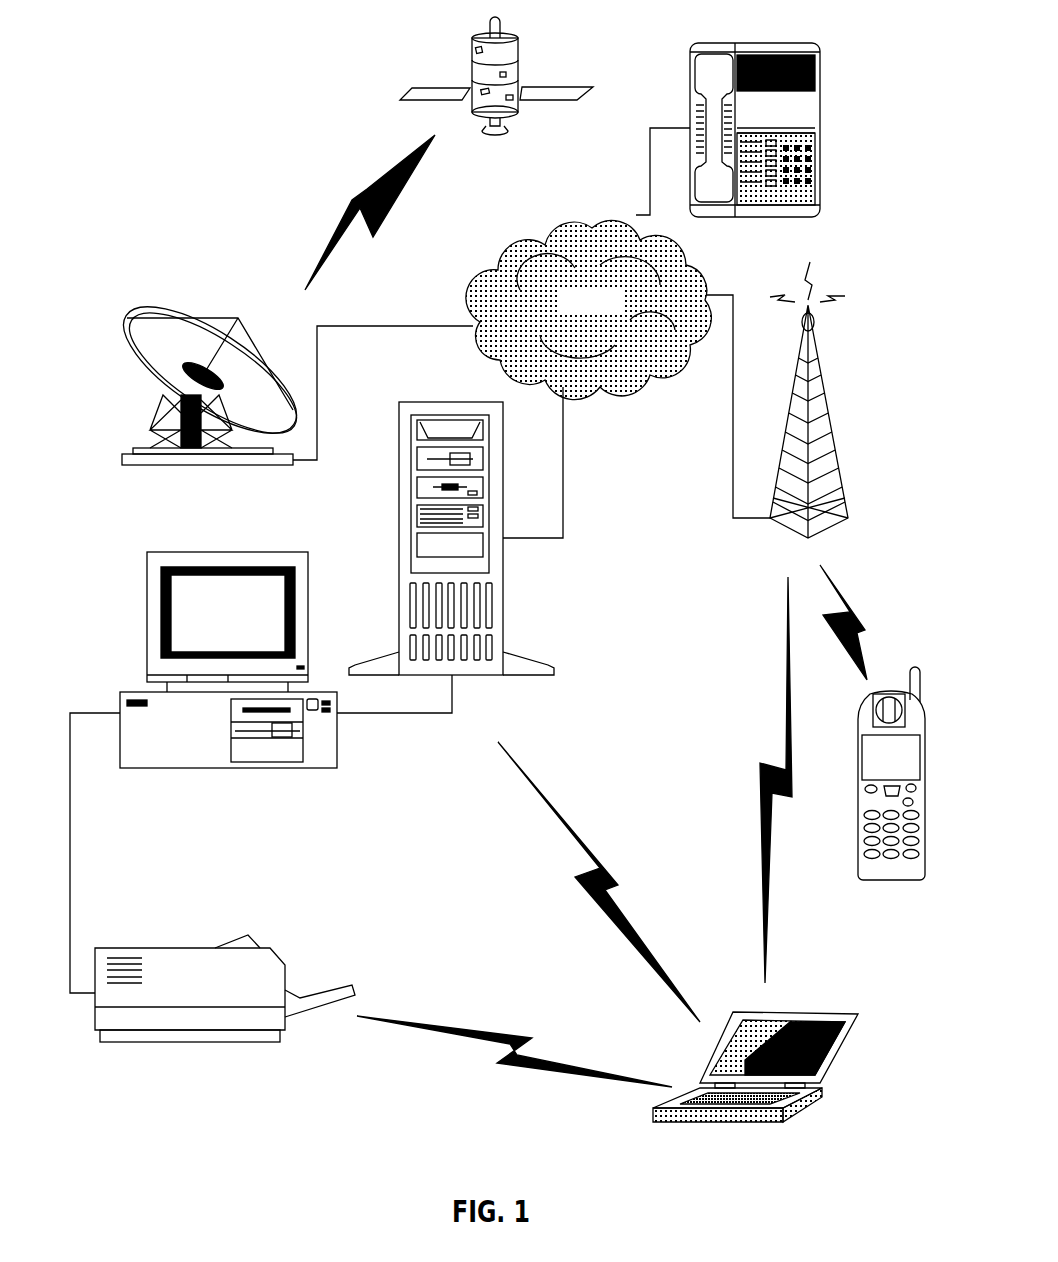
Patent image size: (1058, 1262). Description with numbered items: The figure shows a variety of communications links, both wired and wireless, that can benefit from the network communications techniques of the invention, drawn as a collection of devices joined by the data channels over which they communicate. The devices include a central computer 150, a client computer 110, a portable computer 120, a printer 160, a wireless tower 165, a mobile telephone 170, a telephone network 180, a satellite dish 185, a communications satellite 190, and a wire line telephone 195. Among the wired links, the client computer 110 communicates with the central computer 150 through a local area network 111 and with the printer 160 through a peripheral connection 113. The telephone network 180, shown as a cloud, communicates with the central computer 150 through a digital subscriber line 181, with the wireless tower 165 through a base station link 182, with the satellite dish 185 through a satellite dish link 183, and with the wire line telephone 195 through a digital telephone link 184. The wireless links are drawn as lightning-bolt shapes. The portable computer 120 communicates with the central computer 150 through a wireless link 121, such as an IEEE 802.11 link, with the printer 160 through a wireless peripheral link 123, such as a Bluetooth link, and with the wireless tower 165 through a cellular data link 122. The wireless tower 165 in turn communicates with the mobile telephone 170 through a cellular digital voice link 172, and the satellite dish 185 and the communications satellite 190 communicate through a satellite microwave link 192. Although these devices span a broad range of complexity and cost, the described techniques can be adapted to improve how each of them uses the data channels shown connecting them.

The client computer 110 is at (150, 617).
The local area network (LAN) 111 is at (381, 715).
The peripheral connection 113 is at (72, 812).
The portable computer 120 is at (795, 1013).
The wireless link 121 is at (608, 867).
The cellular data link 122 is at (760, 825).
The wireless peripheral link 123 is at (525, 1037).
The central computer 150 is at (533, 680).
The printer 160 is at (192, 947).
The wireless tower 165 is at (827, 413).
The mobile telephone 170 is at (887, 876).
The cellular digital voice link 172 is at (850, 605).
The telephone network 180 is at (562, 335).
The digital subscriber line (DSL) 181 is at (563, 477).
The base station link 182 is at (733, 408).
The satellite dish link 183 is at (430, 324).
The digital telephone link 184 is at (650, 185).
The satellite dish 185 is at (200, 303).
The communications satellite 190 is at (588, 78).
The satellite microwave link 192 is at (345, 227).
The wire line telephone 195 is at (820, 120).